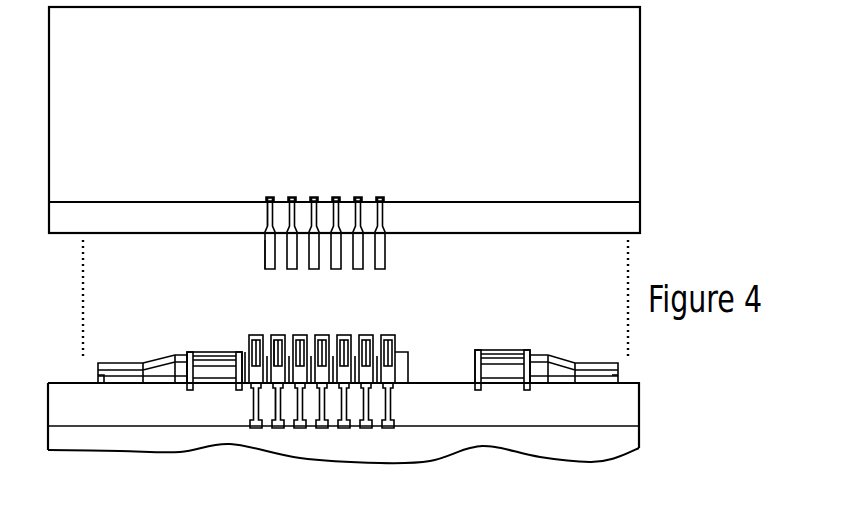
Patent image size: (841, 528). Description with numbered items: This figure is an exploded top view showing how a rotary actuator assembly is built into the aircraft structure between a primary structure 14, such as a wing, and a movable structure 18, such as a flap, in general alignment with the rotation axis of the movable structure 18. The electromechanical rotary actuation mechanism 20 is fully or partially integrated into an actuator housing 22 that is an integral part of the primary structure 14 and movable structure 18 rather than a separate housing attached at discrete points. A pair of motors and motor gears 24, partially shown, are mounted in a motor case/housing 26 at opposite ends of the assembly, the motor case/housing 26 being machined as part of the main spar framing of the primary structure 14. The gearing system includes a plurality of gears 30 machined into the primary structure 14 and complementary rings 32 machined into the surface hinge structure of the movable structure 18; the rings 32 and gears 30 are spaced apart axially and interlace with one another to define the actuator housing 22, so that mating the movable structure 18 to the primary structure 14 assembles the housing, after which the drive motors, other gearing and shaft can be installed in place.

The primary structure 14 is at (630, 432).
The movable structure 18 is at (624, 127).
The electromechanical rotary actuation mechanism 20 is at (403, 270).
The actuator housing 22 is at (134, 212).
The motors and motor gears 24 is at (157, 362).
The motor case/housing 26 is at (214, 354).
The outer gear rings 30 is at (323, 337).
The outer gear rings 32 is at (375, 268).